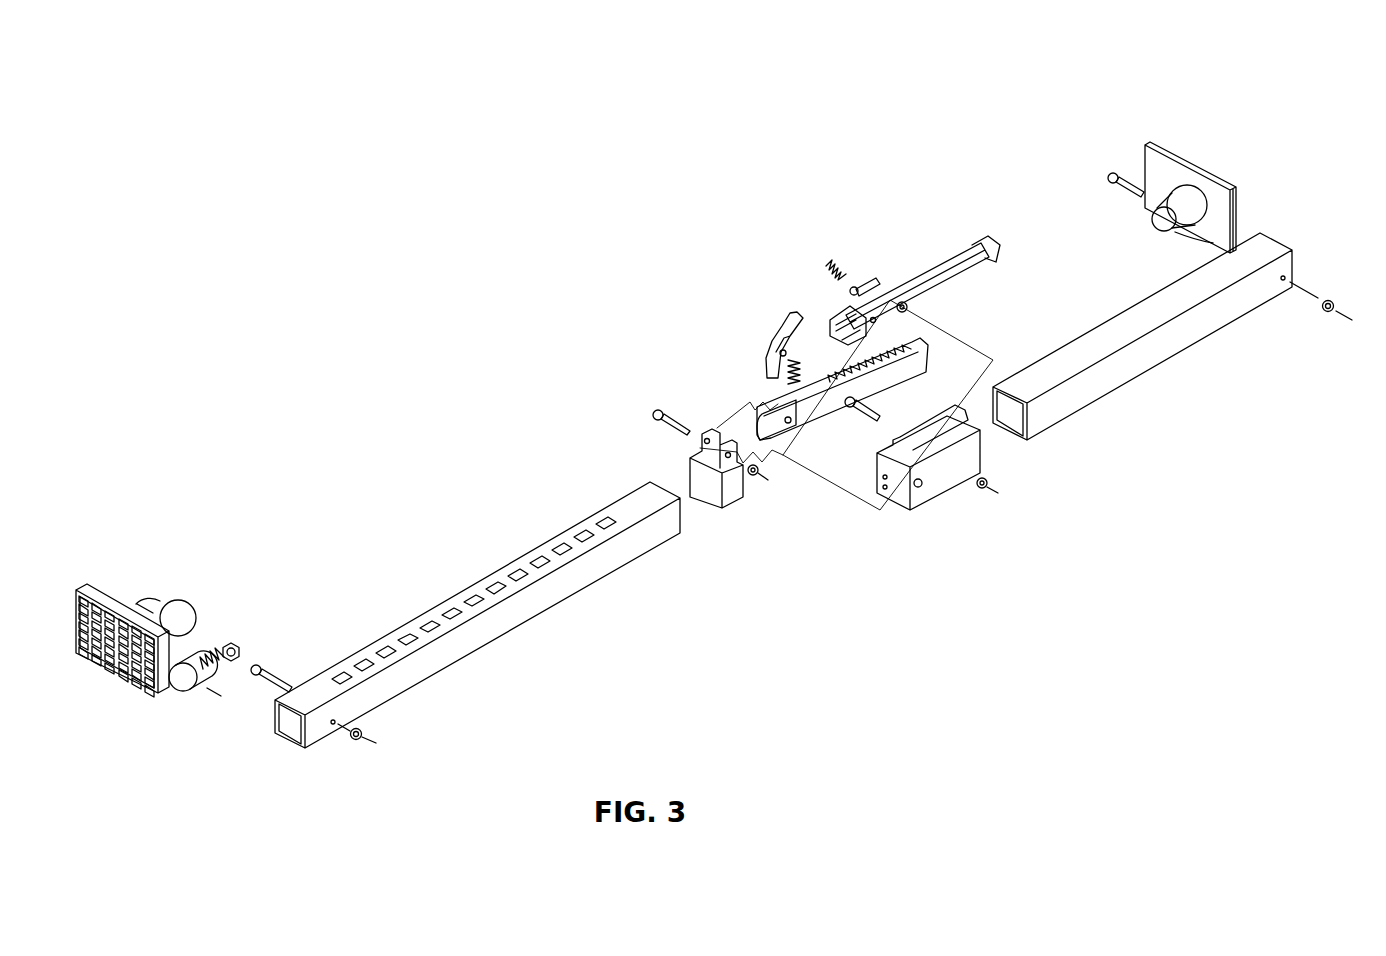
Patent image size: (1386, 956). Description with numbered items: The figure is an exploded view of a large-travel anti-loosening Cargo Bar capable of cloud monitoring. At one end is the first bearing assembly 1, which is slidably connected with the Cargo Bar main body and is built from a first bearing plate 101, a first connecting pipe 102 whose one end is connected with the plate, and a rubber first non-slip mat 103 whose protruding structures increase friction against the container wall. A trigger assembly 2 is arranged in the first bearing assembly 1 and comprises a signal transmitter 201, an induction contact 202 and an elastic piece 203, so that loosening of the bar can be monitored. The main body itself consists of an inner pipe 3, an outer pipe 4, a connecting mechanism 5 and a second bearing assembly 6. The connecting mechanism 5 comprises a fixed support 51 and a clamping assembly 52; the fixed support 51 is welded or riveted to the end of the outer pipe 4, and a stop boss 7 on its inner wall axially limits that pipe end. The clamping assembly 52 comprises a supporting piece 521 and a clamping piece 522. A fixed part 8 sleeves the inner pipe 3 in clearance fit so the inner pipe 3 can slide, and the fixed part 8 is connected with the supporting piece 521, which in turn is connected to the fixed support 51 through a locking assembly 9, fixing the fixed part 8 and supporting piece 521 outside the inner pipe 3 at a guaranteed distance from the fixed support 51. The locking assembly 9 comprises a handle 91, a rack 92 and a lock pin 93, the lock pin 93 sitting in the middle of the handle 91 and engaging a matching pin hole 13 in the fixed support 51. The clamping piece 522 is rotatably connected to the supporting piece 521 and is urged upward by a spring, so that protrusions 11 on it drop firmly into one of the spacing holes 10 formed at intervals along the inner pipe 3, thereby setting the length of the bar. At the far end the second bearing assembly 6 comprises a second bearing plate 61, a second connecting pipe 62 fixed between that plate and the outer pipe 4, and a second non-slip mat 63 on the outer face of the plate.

The first bearing assembly 1 is at (123, 598).
The first bearing plate 101 is at (105, 600).
The first connecting pipe 102 is at (162, 586).
The first non-slip mat 103 is at (85, 590).
The trigger assembly 2 is at (244, 609).
The signal transmitter 201 is at (192, 670).
The induction contact 202 is at (271, 610).
The elastic piece 203 is at (220, 650).
The inner pipe 3 is at (518, 613).
The spacing holes 10 is at (463, 607).
The outer pipe 4 is at (1100, 385).
The connecting mechanism 5 is at (908, 433).
The fixed support 51 is at (907, 480).
The clamping assembly 52 is at (840, 411).
The supporting piece 521 is at (777, 422).
The clamping piece 522 is at (800, 413).
The second bearing assembly 6 is at (1145, 150).
The second bearing plate 61 is at (1185, 205).
The second connecting pipe 62 is at (1162, 218).
The second non-slip mat 63 is at (1173, 150).
The stop boss 7 is at (937, 497).
The fixed part 8 is at (692, 457).
The locking assembly 9 is at (897, 260).
The handle 91 is at (923, 281).
The rack 92 is at (842, 367).
The lock pin 93 is at (860, 273).
The protrusions 11 is at (780, 368).
The pin hole 13 is at (963, 413).